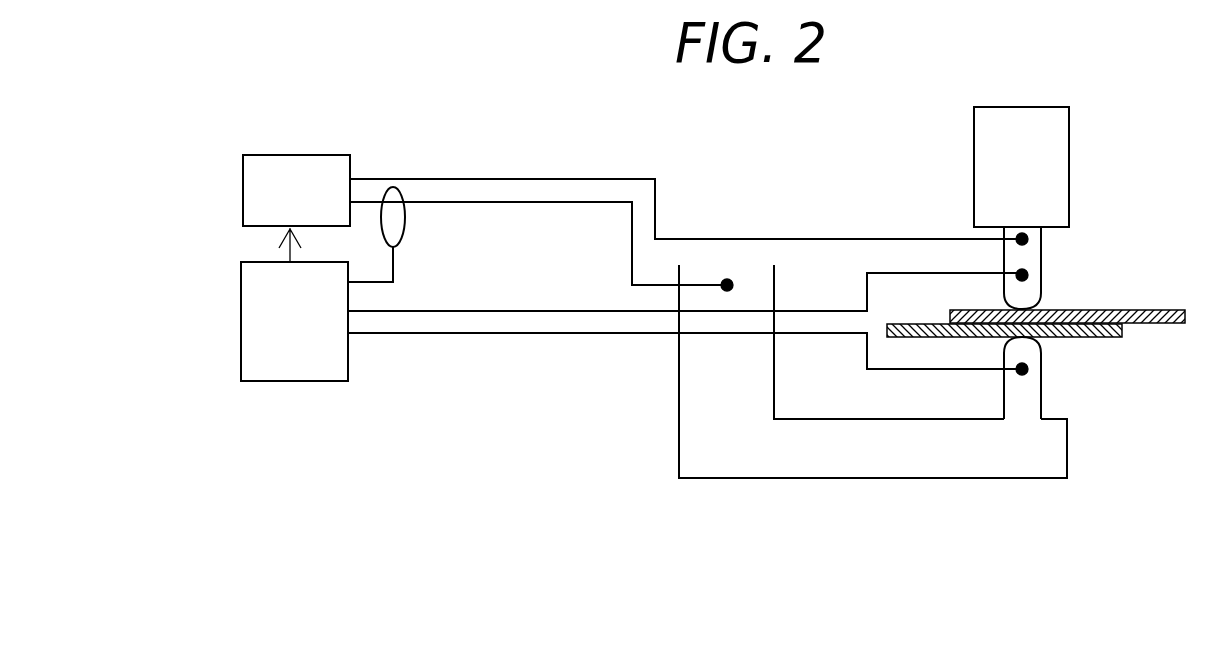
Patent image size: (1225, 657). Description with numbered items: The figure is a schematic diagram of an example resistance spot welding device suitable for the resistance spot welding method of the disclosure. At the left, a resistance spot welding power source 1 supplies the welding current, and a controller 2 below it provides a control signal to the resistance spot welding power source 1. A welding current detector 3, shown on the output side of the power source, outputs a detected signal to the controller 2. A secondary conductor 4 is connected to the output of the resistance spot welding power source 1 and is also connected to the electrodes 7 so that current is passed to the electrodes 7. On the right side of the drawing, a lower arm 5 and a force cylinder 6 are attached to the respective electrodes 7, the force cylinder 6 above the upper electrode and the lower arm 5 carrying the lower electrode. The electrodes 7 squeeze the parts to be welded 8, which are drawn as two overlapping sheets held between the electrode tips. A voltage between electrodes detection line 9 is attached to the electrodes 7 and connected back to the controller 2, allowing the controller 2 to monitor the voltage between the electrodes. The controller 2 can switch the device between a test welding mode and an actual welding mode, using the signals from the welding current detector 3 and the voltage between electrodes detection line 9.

The resistance spot welding power source 1 is at (243, 190).
The controller 2 is at (241, 322).
The welding current detector 3 is at (405, 227).
The secondary conductor 4 is at (513, 202).
The lower arm 5 is at (900, 478).
The force cylinder 6 is at (1069, 167).
The electrodes 7 is at (1041, 263).
The parts to be welded 8 is at (1157, 310).
The voltage between electrodes detection line 9 is at (513, 311).